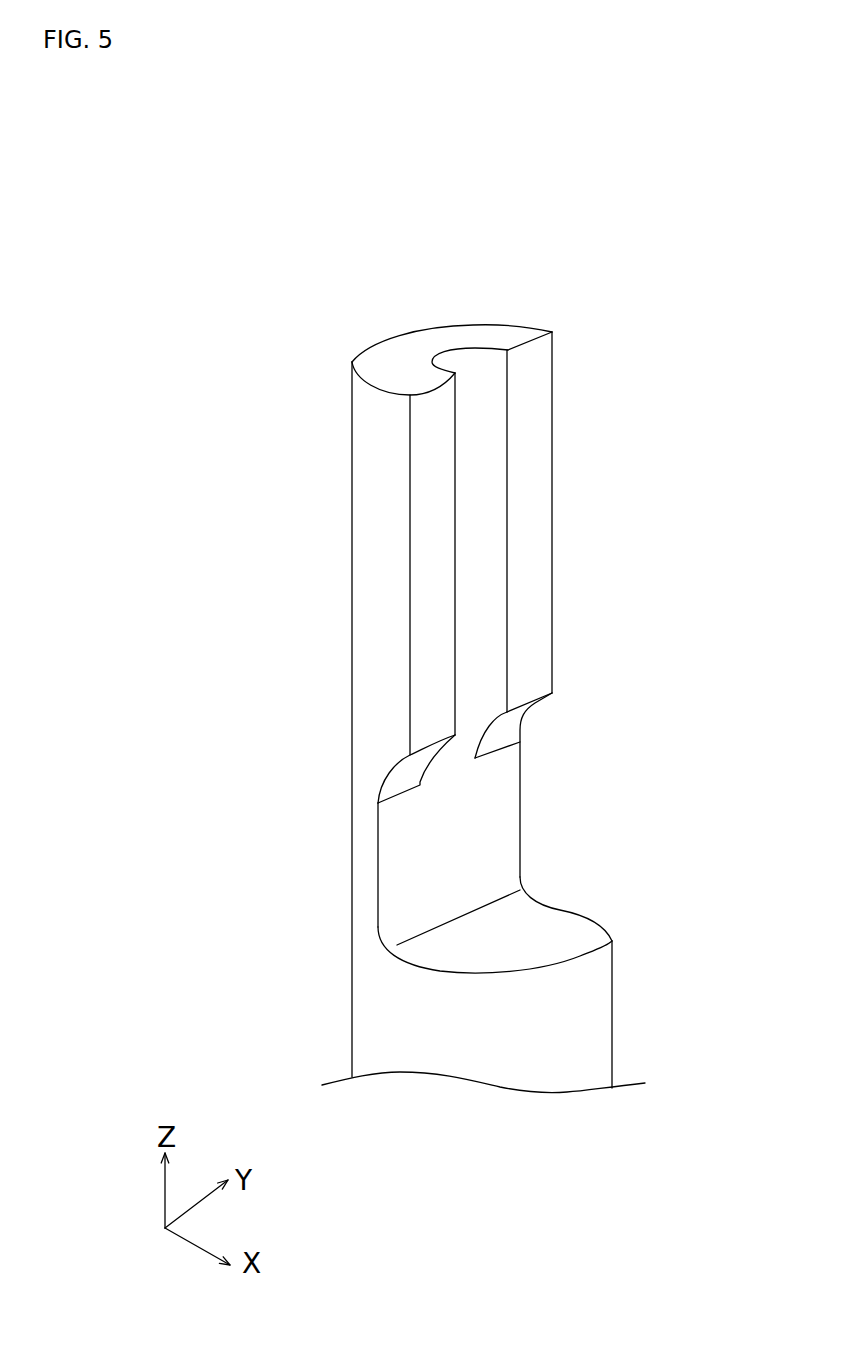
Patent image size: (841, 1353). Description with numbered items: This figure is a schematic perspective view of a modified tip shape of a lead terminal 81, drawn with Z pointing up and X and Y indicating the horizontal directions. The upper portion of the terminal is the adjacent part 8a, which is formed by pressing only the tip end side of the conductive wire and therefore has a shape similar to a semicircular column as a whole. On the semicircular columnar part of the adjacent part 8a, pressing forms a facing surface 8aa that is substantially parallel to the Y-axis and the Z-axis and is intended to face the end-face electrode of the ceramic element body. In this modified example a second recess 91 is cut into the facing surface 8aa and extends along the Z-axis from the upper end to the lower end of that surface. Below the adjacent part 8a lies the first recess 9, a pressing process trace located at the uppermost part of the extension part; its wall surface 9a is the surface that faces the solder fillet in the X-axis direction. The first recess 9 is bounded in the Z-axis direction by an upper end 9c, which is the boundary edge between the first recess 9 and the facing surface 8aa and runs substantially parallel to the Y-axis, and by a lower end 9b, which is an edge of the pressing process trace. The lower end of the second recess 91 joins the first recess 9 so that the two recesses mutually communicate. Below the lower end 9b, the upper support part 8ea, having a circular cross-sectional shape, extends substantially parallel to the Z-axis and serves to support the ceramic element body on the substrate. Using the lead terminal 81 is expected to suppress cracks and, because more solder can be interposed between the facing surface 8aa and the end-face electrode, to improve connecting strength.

The lead terminal 81 is at (504, 654).
The adjacent part 8a is at (383, 550).
The facing surface 8aa is at (530, 498).
The second recess 91 is at (480, 615).
The first recess 9 is at (519, 833).
The wall surface 9a is at (483, 835).
The lower end 9b is at (613, 942).
The upper end 9c is at (522, 712).
The upper support part 8ea is at (568, 1038).